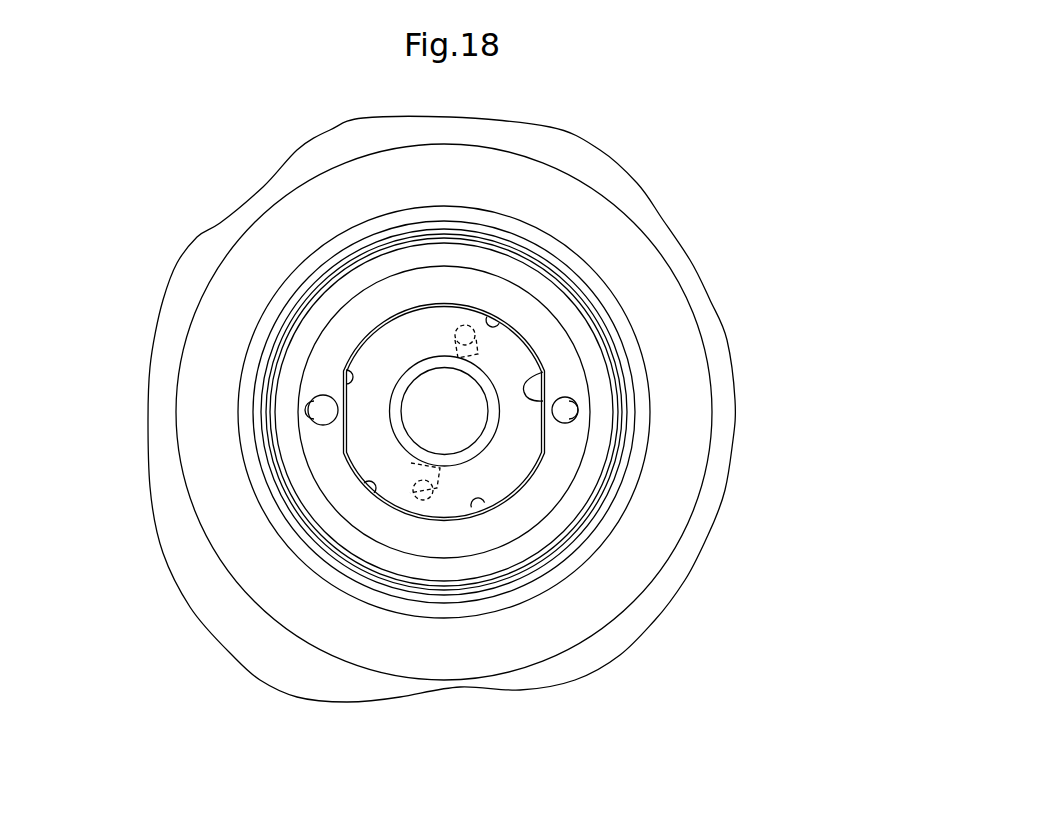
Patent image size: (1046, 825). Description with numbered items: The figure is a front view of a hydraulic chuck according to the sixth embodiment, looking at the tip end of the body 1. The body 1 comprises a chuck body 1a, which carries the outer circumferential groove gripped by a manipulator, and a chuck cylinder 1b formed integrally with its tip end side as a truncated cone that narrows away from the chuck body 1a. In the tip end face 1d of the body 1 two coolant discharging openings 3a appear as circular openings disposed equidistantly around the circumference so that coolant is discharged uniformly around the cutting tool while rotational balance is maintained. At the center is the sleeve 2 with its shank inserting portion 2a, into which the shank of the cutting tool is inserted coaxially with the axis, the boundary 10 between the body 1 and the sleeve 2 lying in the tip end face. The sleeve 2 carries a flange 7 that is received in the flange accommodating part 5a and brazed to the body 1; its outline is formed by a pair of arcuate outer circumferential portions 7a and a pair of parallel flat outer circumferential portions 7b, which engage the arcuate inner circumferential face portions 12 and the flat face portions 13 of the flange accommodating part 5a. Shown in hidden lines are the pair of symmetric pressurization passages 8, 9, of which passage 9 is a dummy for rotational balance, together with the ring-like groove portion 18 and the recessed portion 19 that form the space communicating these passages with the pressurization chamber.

The body 1 is at (656, 221).
The chuck body 1a is at (680, 577).
The chuck cylinder 1b is at (545, 497).
The tip end face 1d is at (555, 470).
The sleeve 2 is at (552, 318).
The shank inserting portion 2a is at (346, 352).
The coolant discharging opening 3a is at (316, 406).
The flange accommodating part 5a is at (375, 490).
The flange 7 is at (502, 472).
The arcuate outer circumferential portion 7a is at (397, 310).
The flat outer circumferential portion 7b is at (543, 435).
The pressurization passage 8 is at (464, 322).
The pressurization passage 9 is at (410, 490).
The boundary 10 is at (368, 325).
The arcuate inner circumferential face portion 12 is at (491, 364).
The flat face portion 13 is at (346, 372).
The circular ring-like groove portion 18 is at (376, 439).
The recessed portion 19 is at (449, 342).